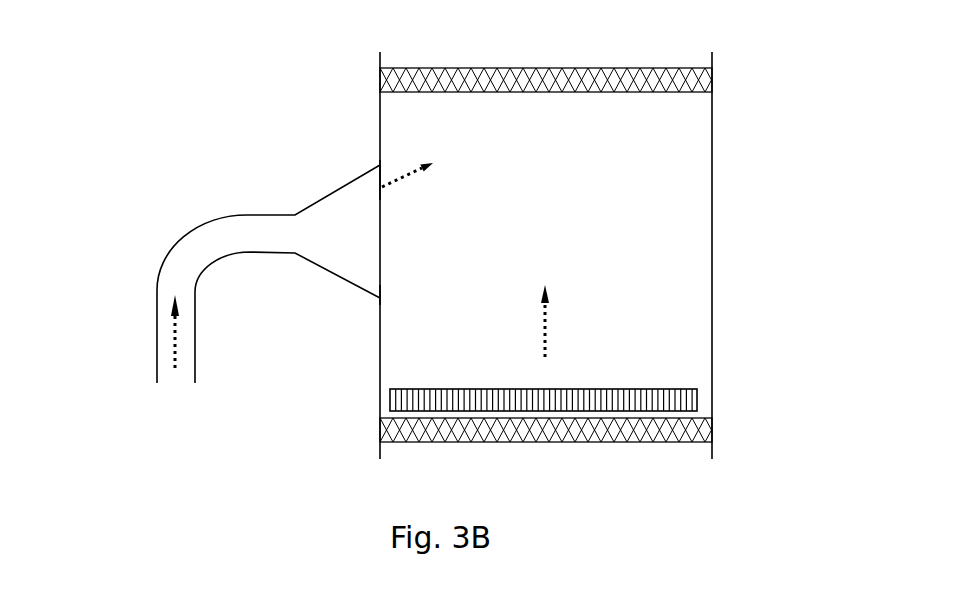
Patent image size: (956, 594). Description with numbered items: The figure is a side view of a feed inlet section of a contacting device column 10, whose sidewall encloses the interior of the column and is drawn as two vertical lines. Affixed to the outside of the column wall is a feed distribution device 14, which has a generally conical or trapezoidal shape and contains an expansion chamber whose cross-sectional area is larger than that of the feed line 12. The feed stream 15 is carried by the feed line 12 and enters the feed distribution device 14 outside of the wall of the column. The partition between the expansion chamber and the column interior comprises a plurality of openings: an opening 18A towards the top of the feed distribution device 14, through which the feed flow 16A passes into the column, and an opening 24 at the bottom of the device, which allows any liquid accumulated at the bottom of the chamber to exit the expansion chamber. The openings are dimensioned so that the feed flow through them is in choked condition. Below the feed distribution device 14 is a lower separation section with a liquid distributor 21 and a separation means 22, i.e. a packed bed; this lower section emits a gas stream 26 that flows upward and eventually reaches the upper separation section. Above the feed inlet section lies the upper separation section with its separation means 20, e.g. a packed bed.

The contacting device column 10 is at (380, 122).
The feed line 12 is at (200, 237).
The feed distribution device 14 is at (325, 277).
The feed stream 15 is at (173, 338).
The feed flow 16A is at (397, 180).
The opening 18A is at (372, 186).
The separation means 20 is at (702, 80).
The liquid distributor 21 is at (697, 395).
The separation means 22 is at (703, 427).
The opening 24 is at (371, 302).
The gas stream 26 is at (564, 321).